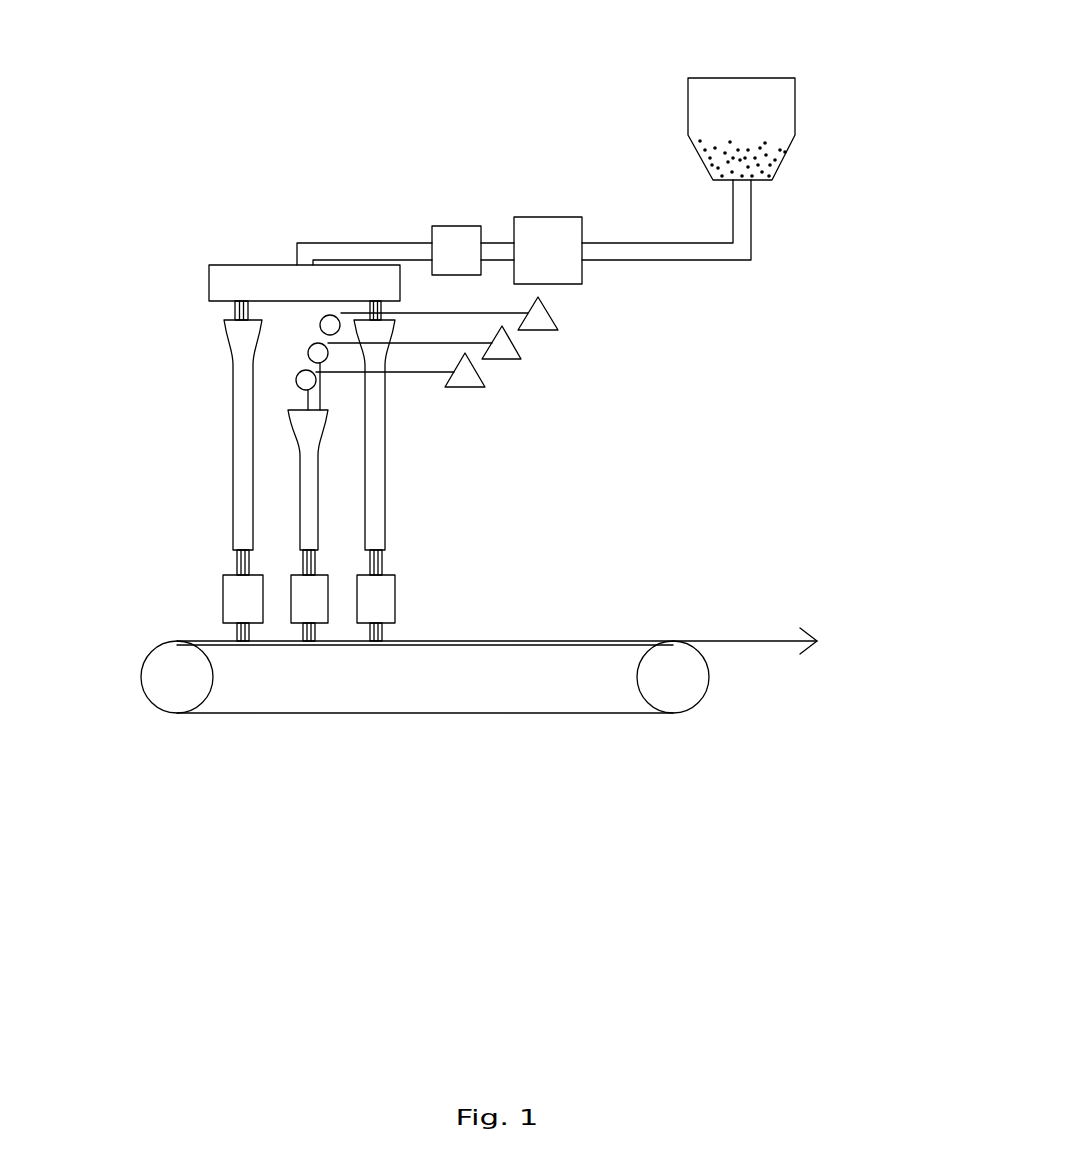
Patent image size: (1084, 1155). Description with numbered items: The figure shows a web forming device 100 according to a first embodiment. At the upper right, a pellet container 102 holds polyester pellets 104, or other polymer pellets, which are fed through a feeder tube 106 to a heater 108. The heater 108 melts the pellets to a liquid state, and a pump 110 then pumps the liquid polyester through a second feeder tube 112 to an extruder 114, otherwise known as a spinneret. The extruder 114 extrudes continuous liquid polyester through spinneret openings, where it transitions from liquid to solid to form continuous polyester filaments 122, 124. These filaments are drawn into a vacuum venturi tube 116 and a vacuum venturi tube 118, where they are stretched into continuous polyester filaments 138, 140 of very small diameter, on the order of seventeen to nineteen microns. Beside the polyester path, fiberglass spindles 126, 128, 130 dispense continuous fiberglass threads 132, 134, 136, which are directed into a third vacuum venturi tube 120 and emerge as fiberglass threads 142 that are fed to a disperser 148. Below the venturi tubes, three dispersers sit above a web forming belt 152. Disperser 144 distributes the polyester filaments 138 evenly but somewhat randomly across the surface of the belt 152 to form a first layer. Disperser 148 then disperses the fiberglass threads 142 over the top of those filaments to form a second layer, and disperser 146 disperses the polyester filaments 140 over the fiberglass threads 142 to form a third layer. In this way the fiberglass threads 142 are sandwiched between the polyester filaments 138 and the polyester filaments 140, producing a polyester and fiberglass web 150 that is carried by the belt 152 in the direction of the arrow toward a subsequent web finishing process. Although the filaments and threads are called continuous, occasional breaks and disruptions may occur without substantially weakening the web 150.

The web forming device 100 is at (273, 829).
The pellet container 102 is at (796, 95).
The polyester pellets 104 is at (790, 153).
The feeder tube 106 is at (753, 242).
The heater 108 is at (546, 217).
The pump 110 is at (453, 226).
The feeder tube 112 is at (332, 243).
The extruder 114 is at (235, 265).
The vacuum venturi tube 116 is at (230, 348).
The vacuum venturi tube 118 is at (380, 522).
The vacuum venturi tube 120 is at (297, 448).
The polyester filaments 122 is at (227, 310).
The polyester filaments 124 is at (388, 308).
The fiberglass spindle 126 is at (558, 316).
The fiberglass spindle 128 is at (524, 343).
The fiberglass spindle 130 is at (487, 375).
The fiberglass thread 132 is at (432, 372).
The fiberglass thread 134 is at (416, 345).
The fiberglass thread 136 is at (406, 315).
The polyester filaments 138 is at (227, 557).
The polyester filaments 140 is at (386, 563).
The fiberglass threads 142 is at (296, 563).
The disperser 144 is at (236, 606).
The disperser 146 is at (386, 612).
The disperser 148 is at (318, 600).
The polyester and fiberglass web 150 is at (745, 641).
The web forming belt 152 is at (530, 713).